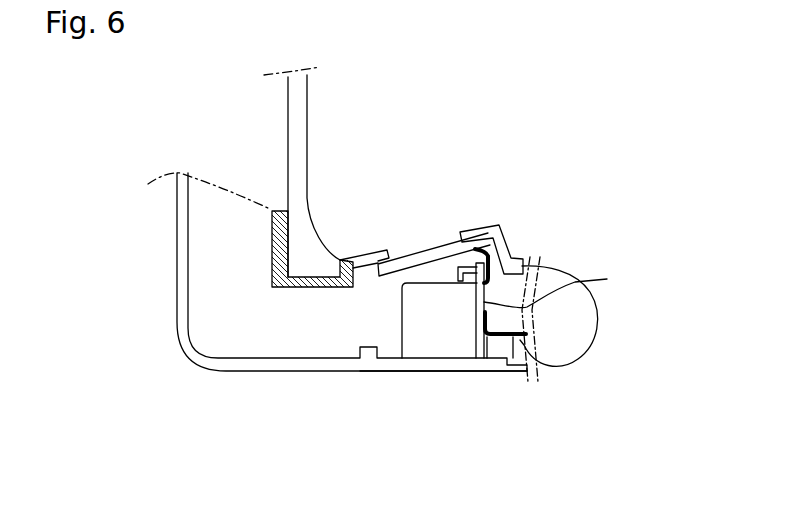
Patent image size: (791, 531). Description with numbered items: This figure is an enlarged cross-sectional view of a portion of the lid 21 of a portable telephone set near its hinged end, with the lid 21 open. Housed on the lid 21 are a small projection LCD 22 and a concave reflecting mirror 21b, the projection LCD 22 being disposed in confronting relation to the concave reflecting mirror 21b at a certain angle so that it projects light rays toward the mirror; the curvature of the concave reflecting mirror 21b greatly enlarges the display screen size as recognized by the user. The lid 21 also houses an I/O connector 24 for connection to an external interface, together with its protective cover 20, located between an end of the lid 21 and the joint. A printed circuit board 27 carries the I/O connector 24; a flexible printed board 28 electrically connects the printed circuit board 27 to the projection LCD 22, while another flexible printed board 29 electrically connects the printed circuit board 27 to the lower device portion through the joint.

The protective cover 20 is at (460, 372).
The lid 21 is at (182, 300).
The concave reflecting mirror 21b is at (307, 132).
The projection LCD 22 is at (423, 251).
The I/O connector 24 is at (422, 345).
The printed circuit board 27 is at (561, 316).
The flexible printed board 28 is at (517, 257).
The flexible printed board 29 is at (518, 337).